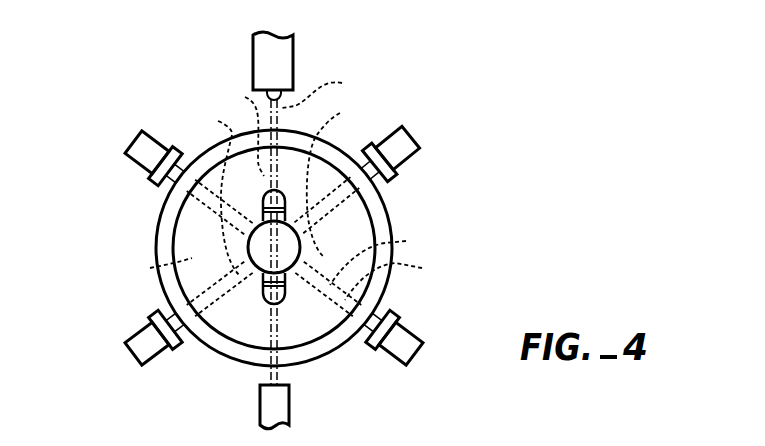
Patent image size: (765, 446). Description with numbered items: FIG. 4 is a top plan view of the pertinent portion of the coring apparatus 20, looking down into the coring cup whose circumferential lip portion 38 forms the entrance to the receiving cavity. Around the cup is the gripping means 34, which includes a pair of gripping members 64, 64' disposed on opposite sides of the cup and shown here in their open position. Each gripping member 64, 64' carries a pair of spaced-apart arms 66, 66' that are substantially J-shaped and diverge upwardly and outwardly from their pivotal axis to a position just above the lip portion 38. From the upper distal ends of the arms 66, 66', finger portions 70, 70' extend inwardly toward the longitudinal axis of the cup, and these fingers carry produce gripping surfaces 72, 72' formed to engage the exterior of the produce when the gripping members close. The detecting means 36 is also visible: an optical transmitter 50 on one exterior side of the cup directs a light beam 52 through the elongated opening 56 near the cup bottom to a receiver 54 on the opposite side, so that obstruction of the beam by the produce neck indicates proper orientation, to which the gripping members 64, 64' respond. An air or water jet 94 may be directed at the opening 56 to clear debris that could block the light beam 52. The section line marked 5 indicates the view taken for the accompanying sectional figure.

The coring apparatus 20 is at (494, 115).
The gripping means 34 is at (252, 325).
The detecting means 36 is at (312, 57).
The lip portion 38 is at (388, 226).
The optical transmitter 50 is at (253, 58).
The light beam 52 is at (241, 129).
The receiver 54 is at (292, 418).
The opening 56 is at (262, 298).
The gripping member 64 is at (183, 248).
The gripping member 64' is at (371, 246).
The spaced-apart arm 66 is at (213, 245).
The spaced-apart arm 66' is at (371, 195).
The finger portion 70 is at (128, 248).
The finger portion 70' is at (412, 244).
The produce gripping surface 72 is at (158, 129).
The produce gripping surface 72' is at (334, 364).
The air or water jet 94 is at (326, 91).
The section line for FIG. 5 is at (278, 203).